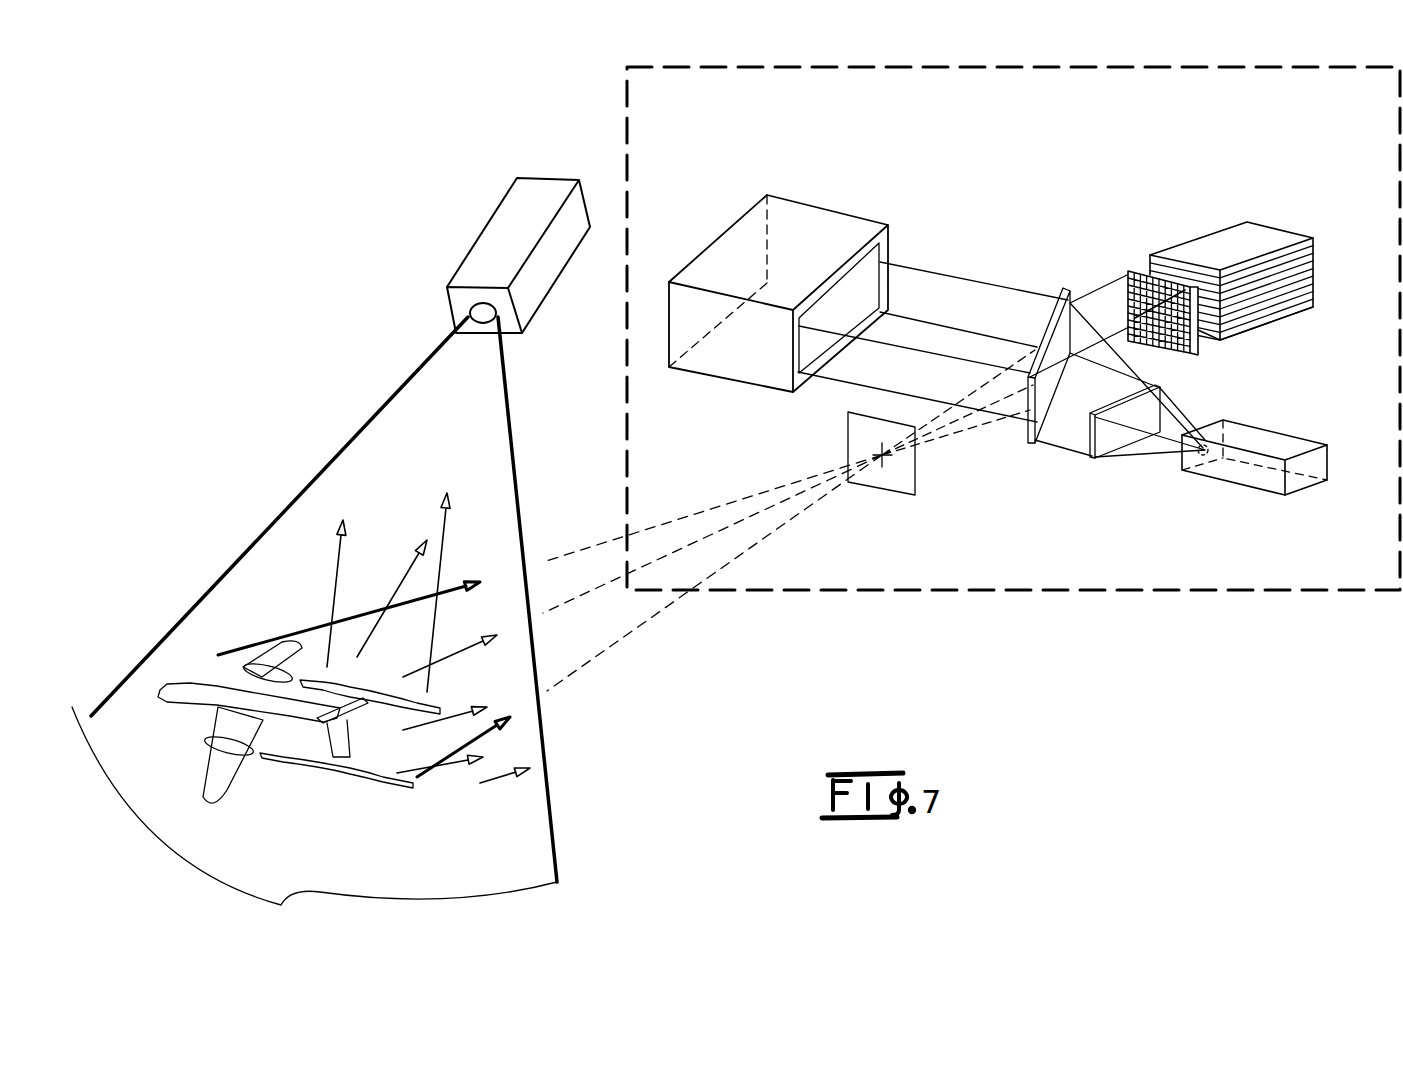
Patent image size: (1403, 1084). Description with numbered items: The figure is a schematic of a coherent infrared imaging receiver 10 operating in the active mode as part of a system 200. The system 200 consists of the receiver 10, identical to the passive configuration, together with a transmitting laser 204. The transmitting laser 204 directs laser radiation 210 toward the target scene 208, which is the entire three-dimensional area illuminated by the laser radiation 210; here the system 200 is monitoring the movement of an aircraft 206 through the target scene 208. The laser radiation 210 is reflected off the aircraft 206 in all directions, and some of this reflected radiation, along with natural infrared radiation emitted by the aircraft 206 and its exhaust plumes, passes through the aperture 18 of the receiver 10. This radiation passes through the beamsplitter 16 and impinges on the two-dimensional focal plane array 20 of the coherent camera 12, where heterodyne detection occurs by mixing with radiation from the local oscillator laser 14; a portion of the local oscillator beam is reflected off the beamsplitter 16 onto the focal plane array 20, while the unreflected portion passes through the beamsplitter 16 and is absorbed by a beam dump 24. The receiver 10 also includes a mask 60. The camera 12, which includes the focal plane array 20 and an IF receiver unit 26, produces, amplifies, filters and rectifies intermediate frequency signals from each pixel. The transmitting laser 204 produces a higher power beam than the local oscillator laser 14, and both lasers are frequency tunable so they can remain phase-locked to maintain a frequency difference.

The system 200 is at (493, 98).
The coherent infrared imaging receiver 10 is at (1045, 590).
The transmitting laser 204 is at (478, 232).
The laser radiation 210 is at (255, 539).
The target scene 208 is at (314, 821).
The aircraft 206 is at (178, 705).
The beam dump 24 is at (718, 237).
The beamsplitter 16 is at (1028, 437).
The aperture 18 is at (920, 492).
The focal plane array 20 is at (1195, 355).
The coherent camera 12 is at (1244, 265).
The IF receiver unit 26 is at (1272, 222).
The mask 60 is at (1090, 456).
The local oscillator laser 14 is at (1257, 425).